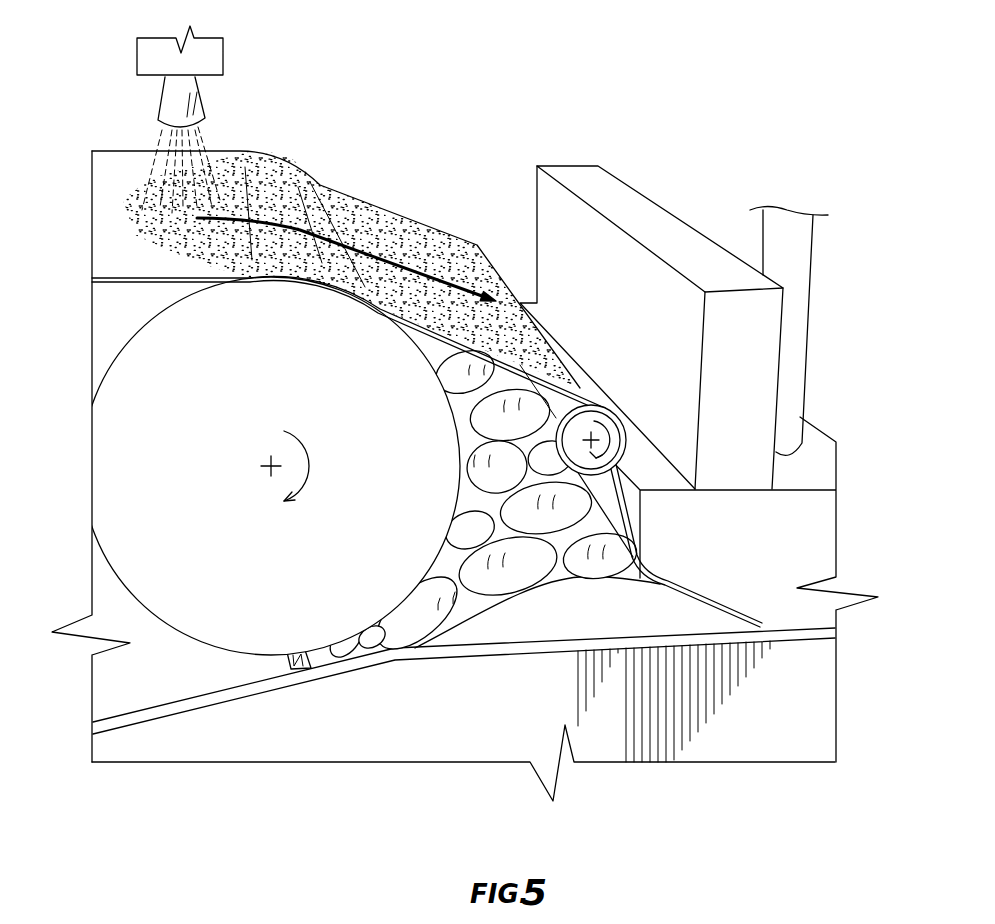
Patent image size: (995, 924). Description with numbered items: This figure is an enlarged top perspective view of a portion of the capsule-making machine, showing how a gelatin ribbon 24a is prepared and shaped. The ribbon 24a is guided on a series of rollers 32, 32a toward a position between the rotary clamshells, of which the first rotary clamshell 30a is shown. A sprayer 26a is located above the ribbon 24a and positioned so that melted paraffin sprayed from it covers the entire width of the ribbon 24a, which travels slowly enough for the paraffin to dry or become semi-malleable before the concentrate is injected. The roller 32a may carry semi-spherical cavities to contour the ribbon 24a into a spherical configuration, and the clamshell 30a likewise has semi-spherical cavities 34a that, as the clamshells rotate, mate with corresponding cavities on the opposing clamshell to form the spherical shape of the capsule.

The ribbon 24a is at (108, 227).
The sprayer 26a is at (213, 56).
The first rotary clamshell 30a is at (630, 612).
The roller 32 is at (122, 402).
The roller 32a is at (583, 423).
The semi-spherical cavity 34a is at (507, 572).